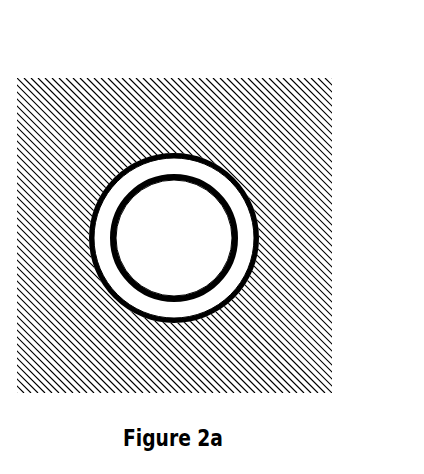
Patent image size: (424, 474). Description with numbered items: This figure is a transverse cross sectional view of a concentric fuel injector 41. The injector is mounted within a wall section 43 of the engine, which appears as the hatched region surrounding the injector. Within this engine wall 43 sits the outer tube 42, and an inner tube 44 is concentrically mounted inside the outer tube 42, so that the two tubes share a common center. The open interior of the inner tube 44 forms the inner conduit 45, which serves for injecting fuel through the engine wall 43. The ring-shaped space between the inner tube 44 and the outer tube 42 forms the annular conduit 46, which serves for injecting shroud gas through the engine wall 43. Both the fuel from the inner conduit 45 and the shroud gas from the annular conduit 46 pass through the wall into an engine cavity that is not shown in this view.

The injector 41 is at (212, 205).
The outer tube 42 is at (234, 180).
The wall section 43 is at (162, 79).
The inner tube 44 is at (225, 205).
The inner conduit 45 is at (213, 228).
The annular conduit 46 is at (239, 270).